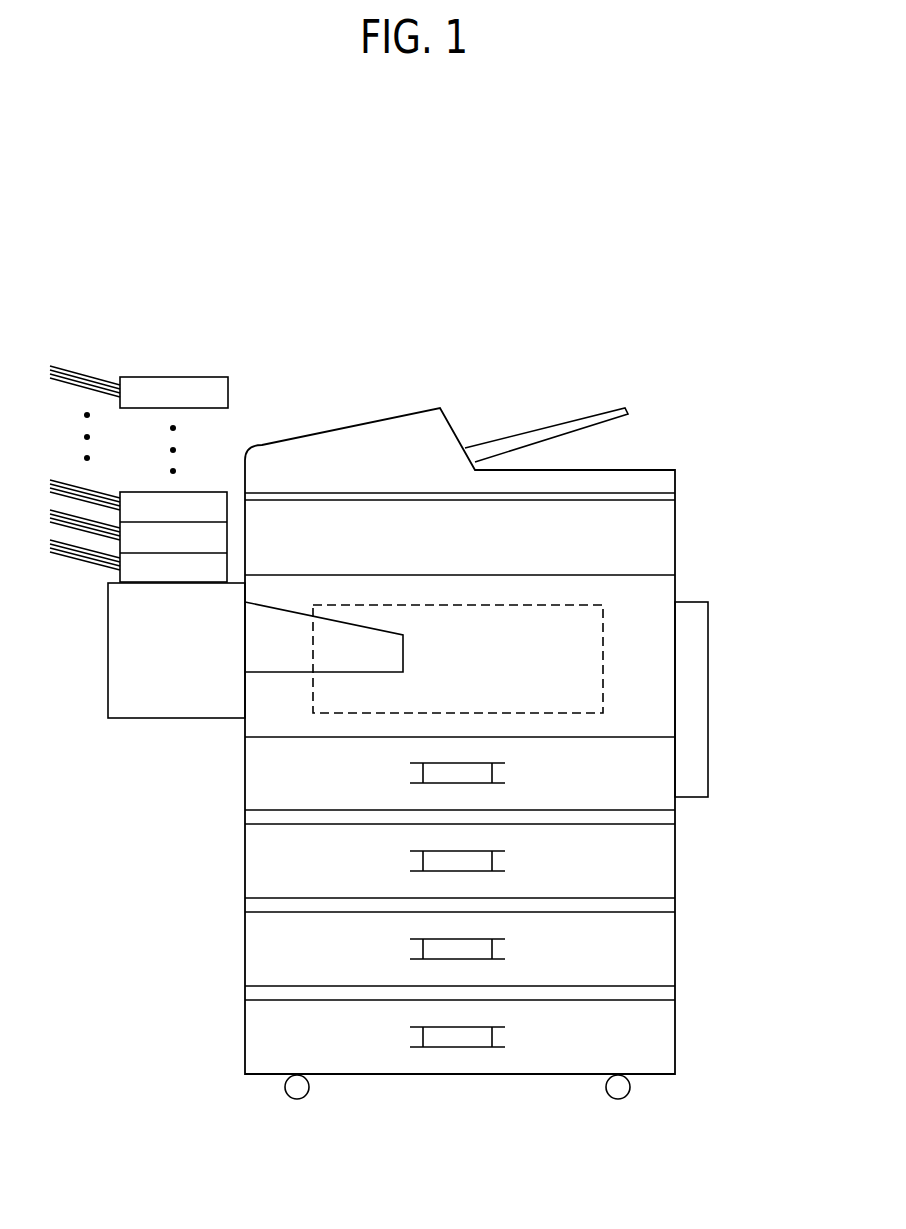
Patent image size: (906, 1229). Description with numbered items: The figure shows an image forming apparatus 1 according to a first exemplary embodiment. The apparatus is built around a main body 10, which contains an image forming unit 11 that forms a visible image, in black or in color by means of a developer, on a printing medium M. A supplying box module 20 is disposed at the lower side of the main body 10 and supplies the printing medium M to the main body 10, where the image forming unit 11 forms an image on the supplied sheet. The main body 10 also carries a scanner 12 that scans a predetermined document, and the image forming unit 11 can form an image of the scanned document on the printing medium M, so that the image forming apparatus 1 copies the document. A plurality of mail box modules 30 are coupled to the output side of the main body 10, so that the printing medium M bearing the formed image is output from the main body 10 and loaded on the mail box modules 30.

The image forming apparatus 1 is at (697, 322).
The main body 10 is at (697, 557).
The image forming unit 11 is at (605, 665).
The scanner 12 is at (670, 517).
The supplying box module 20 is at (217, 887).
The mail box modules 30 is at (227, 367).
The printing medium M is at (62, 365).